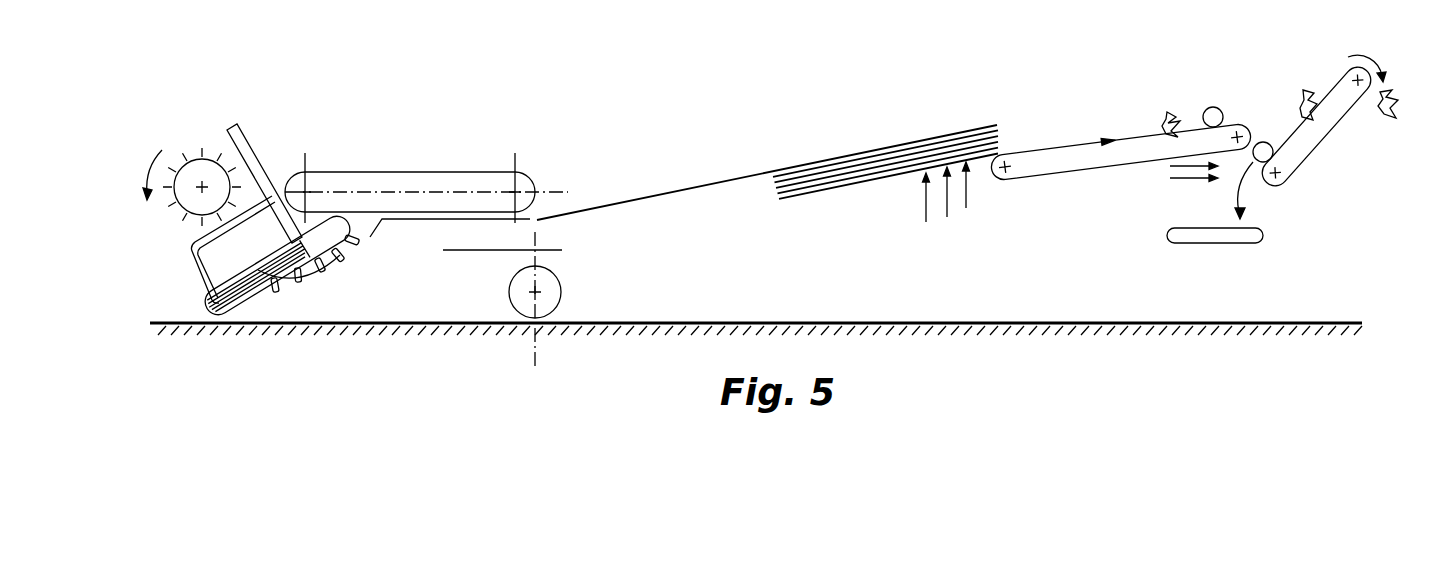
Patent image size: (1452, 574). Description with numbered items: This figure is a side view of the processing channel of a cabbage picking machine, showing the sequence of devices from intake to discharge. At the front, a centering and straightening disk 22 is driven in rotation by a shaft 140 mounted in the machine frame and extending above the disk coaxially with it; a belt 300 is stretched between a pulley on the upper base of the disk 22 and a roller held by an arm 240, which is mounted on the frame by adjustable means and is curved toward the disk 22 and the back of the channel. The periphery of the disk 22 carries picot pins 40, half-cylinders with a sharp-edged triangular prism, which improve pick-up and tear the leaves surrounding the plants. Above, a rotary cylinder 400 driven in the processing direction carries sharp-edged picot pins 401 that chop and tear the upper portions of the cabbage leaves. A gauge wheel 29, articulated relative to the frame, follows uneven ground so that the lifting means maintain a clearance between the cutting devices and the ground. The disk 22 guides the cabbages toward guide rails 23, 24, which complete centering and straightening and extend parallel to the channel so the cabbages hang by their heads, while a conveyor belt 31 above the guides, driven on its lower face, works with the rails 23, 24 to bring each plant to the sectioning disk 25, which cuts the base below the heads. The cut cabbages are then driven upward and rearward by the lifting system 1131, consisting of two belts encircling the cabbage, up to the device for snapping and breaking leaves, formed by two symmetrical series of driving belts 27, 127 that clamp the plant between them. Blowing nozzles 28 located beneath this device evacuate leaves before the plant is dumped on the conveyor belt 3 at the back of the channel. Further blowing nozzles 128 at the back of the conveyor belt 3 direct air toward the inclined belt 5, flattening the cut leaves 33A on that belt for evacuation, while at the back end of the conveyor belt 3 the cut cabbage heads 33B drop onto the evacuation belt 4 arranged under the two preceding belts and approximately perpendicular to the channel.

The rotary cylinder 400 is at (183, 153).
The picot pins 401 is at (195, 162).
The shaft 140 is at (258, 155).
The arm 240 is at (190, 243).
The belt 300 is at (292, 296).
The centering and straightening disk 22 is at (308, 267).
The picot pins 40 is at (357, 242).
The conveyor belt 31 is at (423, 172).
The guide rail 24 is at (450, 258).
The guide rail 23 is at (408, 222).
The sectioning disk 25 is at (490, 252).
The gauge wheel 29 is at (553, 285).
The lifting system 1131 is at (680, 188).
The driving belt 27 is at (885, 141).
The driving belt 127 is at (895, 152).
The blowing nozzles 28 is at (926, 212).
The conveyor belt 3 is at (1053, 157).
The blowing nozzles 128 is at (1174, 181).
The cut cabbage heads 33B is at (1223, 117).
The inclined belt 5 is at (1337, 92).
The cut leaves 33A is at (1303, 92).
The evacuation belt 4 is at (1263, 236).